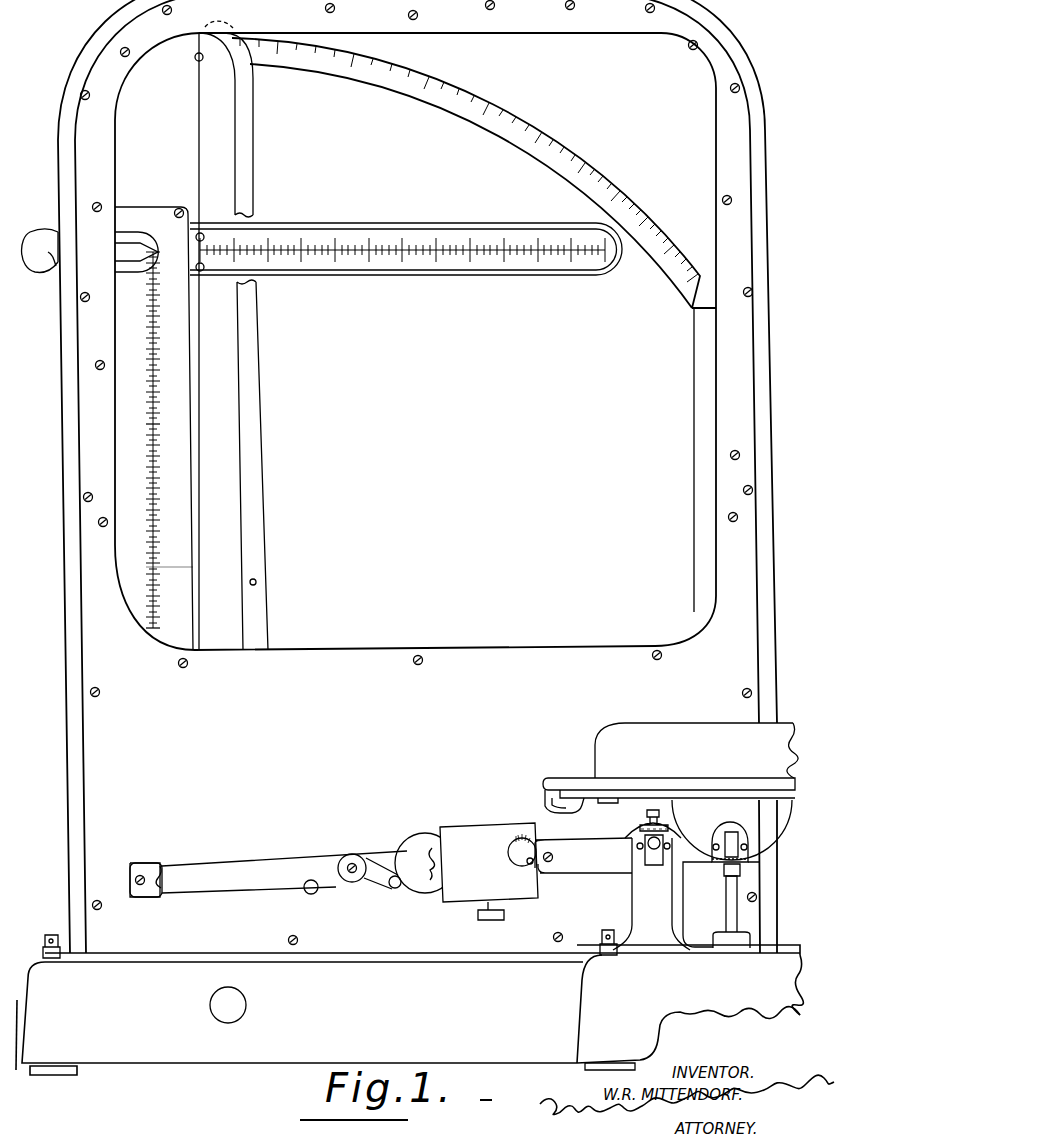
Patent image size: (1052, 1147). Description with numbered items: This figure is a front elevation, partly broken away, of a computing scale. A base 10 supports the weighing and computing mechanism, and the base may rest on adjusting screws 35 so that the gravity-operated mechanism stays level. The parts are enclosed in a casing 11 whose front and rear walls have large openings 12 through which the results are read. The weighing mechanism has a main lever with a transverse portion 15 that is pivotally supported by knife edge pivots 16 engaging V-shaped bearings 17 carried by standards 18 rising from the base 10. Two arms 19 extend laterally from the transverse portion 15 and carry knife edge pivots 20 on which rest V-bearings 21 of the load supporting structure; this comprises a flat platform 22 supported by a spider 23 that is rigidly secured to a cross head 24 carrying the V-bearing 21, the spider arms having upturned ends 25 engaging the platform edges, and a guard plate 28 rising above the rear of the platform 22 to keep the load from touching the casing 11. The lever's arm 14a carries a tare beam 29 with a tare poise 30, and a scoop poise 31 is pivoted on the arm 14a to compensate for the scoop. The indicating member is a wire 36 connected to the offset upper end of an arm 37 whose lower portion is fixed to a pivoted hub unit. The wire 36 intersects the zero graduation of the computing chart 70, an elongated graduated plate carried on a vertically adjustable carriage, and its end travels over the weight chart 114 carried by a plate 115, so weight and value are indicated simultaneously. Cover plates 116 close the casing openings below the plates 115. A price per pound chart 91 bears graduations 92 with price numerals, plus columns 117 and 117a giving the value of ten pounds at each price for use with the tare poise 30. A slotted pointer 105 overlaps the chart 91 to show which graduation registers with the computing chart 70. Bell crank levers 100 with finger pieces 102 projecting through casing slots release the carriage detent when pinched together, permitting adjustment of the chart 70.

The base 10 is at (409, 1010).
The casing 11 is at (76, 50).
The openings 12 is at (355, 650).
The arm 14a is at (268, 874).
The transverse portion 15 is at (630, 856).
The knife edge pivots 16 is at (642, 836).
The V-shaped bearings 17 is at (653, 858).
The standards 18 is at (651, 894).
The arms 19 is at (732, 873).
The knife edge pivots 20 is at (728, 868).
The V-bearings 21 is at (728, 838).
The platform 22 is at (730, 787).
The spider 23 is at (632, 798).
The cross head 24 is at (738, 866).
The upturned ends 25 is at (560, 800).
The guard plate 28 is at (696, 750).
The tare beam 29 is at (437, 880).
The tare poise 30 is at (489, 871).
The scoop poise 31 is at (425, 845).
The adjusting screws 35 is at (50, 935).
The wire 36 is at (198, 115).
The arm 37 is at (245, 128).
The computing chart 70 is at (497, 276).
The price per pound chart 91 is at (193, 372).
The graduations 92 is at (160, 630).
The bell crank levers 100 is at (52, 258).
The finger pieces 102 is at (28, 242).
The pointer 105 is at (128, 240).
The weight chart 114 is at (512, 112).
The plate 115 is at (321, 99).
The cover plates 116 is at (578, 460).
The series of numerals 117 is at (193, 567).
The series of numerals 117a is at (146, 425).